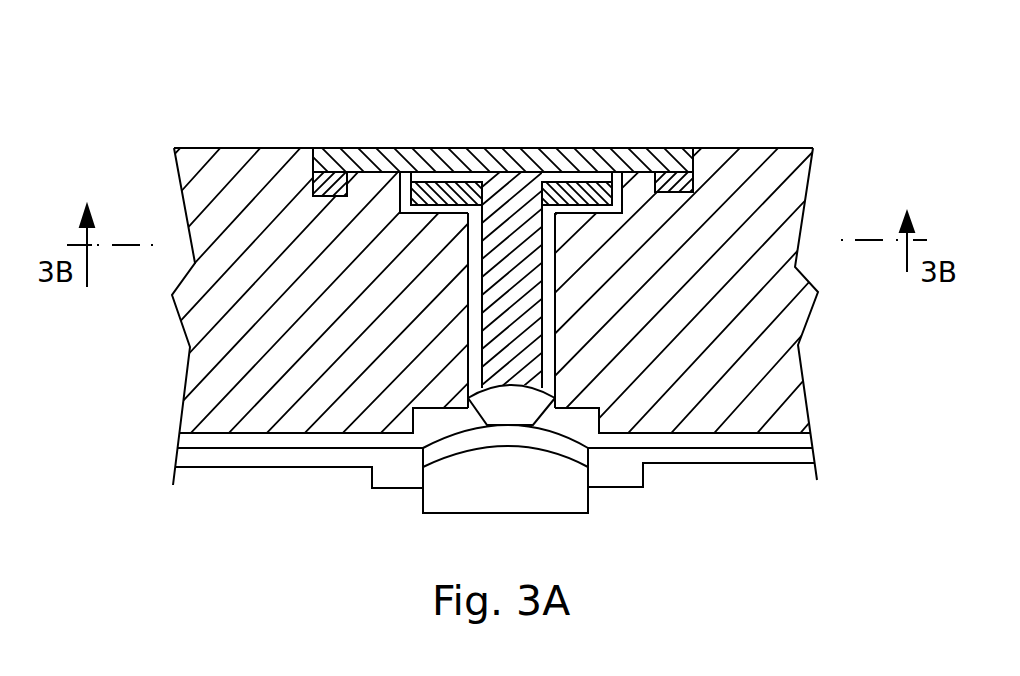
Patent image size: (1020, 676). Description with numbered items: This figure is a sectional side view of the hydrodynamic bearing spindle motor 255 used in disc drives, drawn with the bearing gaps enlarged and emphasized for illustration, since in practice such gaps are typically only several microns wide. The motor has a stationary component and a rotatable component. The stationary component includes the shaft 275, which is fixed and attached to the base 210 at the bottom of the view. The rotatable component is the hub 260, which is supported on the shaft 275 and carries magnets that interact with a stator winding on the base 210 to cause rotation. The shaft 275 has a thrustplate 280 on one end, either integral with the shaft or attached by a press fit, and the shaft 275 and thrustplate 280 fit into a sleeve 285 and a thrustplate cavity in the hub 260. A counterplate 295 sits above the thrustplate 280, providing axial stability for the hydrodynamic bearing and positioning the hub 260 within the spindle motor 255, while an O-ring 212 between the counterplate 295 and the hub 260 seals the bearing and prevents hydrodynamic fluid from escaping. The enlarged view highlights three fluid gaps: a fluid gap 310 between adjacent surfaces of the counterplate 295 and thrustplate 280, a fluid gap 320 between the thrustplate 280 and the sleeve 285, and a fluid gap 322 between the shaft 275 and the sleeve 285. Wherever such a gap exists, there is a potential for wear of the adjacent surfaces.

The base 210 is at (742, 458).
The O-ring 212 is at (313, 190).
The hydrodynamic bearing spindle motor 255 is at (283, 80).
The hub 260 is at (788, 195).
The shaft 275 is at (527, 302).
The thrustplate 280 is at (440, 183).
The sleeve 285 is at (703, 323).
The counterplate 295 is at (662, 149).
The fluid gap 310 is at (445, 160).
The fluid gap 320 is at (411, 211).
The fluid gap 322 is at (468, 338).